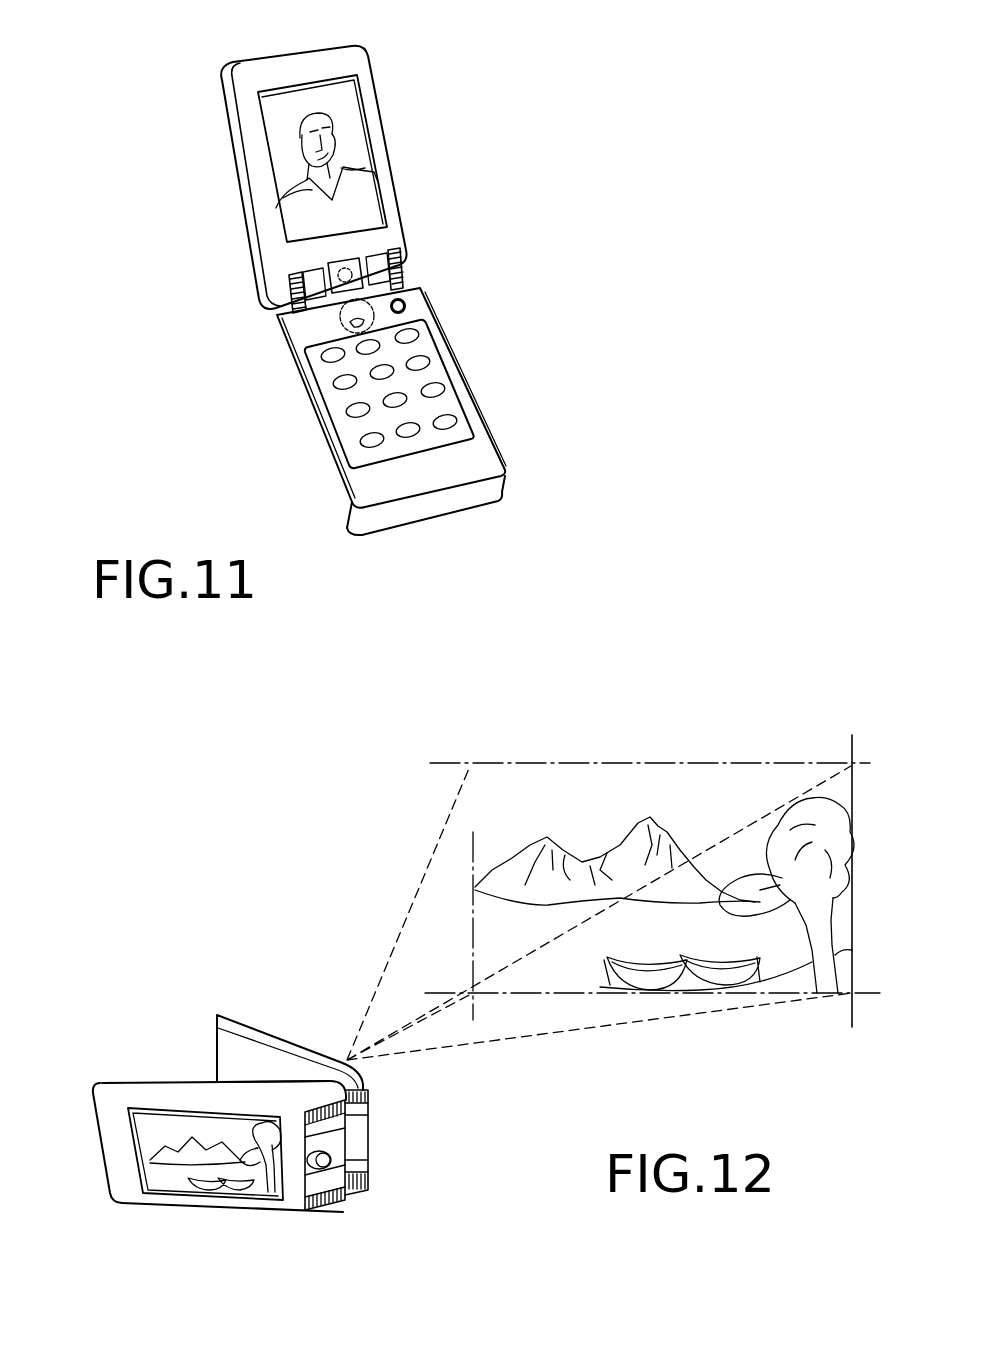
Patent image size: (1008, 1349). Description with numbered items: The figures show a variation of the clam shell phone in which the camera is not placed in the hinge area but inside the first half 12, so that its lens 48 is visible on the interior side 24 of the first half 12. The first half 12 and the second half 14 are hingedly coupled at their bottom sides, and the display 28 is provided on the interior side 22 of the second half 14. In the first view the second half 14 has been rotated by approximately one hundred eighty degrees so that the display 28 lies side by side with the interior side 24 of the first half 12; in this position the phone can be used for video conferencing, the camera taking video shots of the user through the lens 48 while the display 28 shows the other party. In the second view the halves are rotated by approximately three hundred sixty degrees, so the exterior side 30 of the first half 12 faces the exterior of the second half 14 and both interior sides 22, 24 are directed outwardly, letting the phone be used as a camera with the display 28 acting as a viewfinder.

In FIG. 11, the first half 12 is at (370, 409).
In FIG. 12, the first half 12 is at (260, 1024).
In FIG. 11, the second half 14 is at (307, 161).
In FIG. 12, the second half 14 is at (199, 1162).
In FIG. 11, the interior side of the second half 22 is at (342, 60).
In FIG. 12, the interior side of the second half 22 is at (113, 1130).
In FIG. 11, the interior side of the first half 24 is at (478, 447).
In FIG. 11, the display 28 is at (345, 120).
In FIG. 12, the display 28 is at (168, 1180).
In FIG. 12, the exterior side of the first half 30 is at (223, 1057).
In FIG. 11, the lens 48 is at (405, 297).